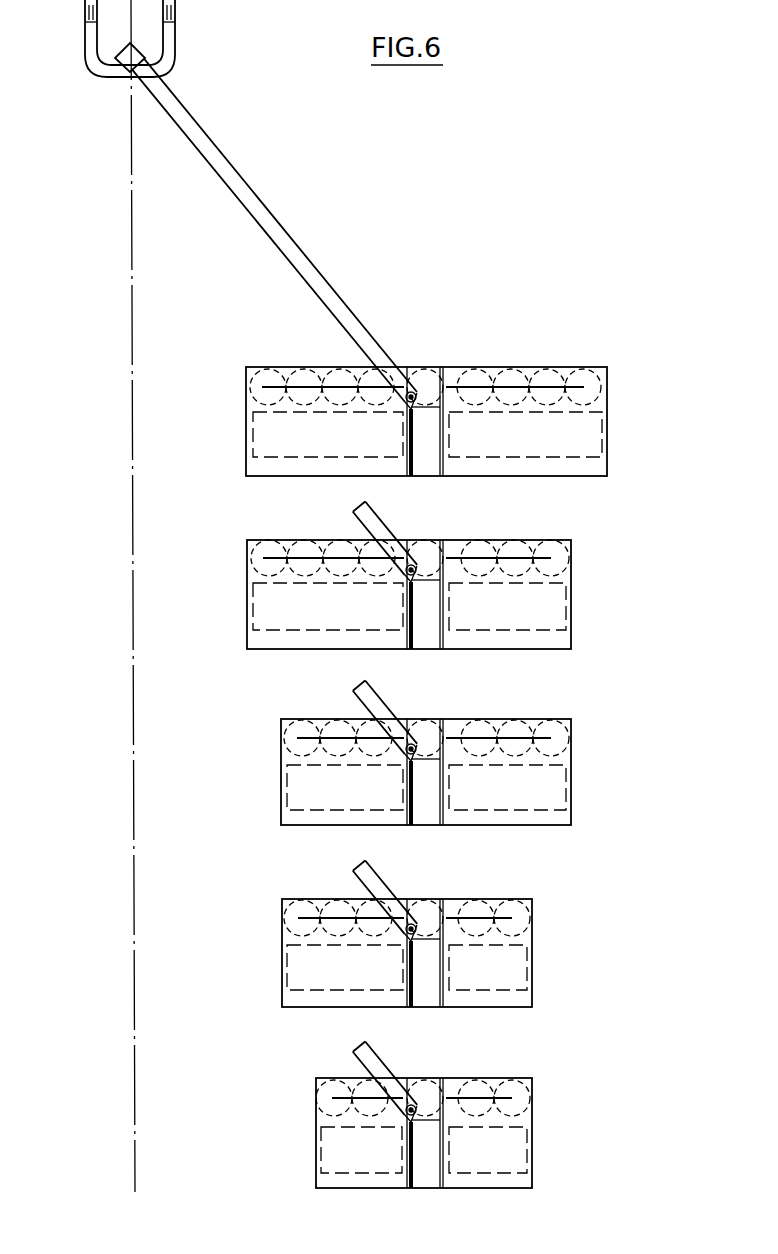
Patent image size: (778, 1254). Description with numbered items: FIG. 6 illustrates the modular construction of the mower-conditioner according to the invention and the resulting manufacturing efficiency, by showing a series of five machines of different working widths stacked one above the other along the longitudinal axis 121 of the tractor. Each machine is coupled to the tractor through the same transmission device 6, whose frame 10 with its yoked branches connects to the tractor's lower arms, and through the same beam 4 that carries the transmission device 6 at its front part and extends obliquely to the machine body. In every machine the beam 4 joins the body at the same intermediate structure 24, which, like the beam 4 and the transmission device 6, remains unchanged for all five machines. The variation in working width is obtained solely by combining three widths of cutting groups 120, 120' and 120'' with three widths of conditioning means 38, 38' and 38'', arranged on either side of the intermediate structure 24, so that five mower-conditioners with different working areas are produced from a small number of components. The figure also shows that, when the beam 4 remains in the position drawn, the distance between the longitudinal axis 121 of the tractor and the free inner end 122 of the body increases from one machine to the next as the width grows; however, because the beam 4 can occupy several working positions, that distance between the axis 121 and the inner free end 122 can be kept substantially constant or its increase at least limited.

The frame 10 is at (96, 77).
The transmission device 6 is at (124, 88).
The beam 4 is at (286, 249).
The intermediate structure 24 is at (418, 367).
The cutting group 120 is at (425, 450).
The cutting group 120' is at (418, 718).
The cutting group 120'' is at (422, 988).
The conditioning means 38 is at (433, 521).
The conditioning means 38' is at (431, 786).
The conditioning means 38'' is at (426, 1059).
The free inner end of body 122 is at (254, 462).
The longitudinal axis of the tractor 121 is at (134, 684).